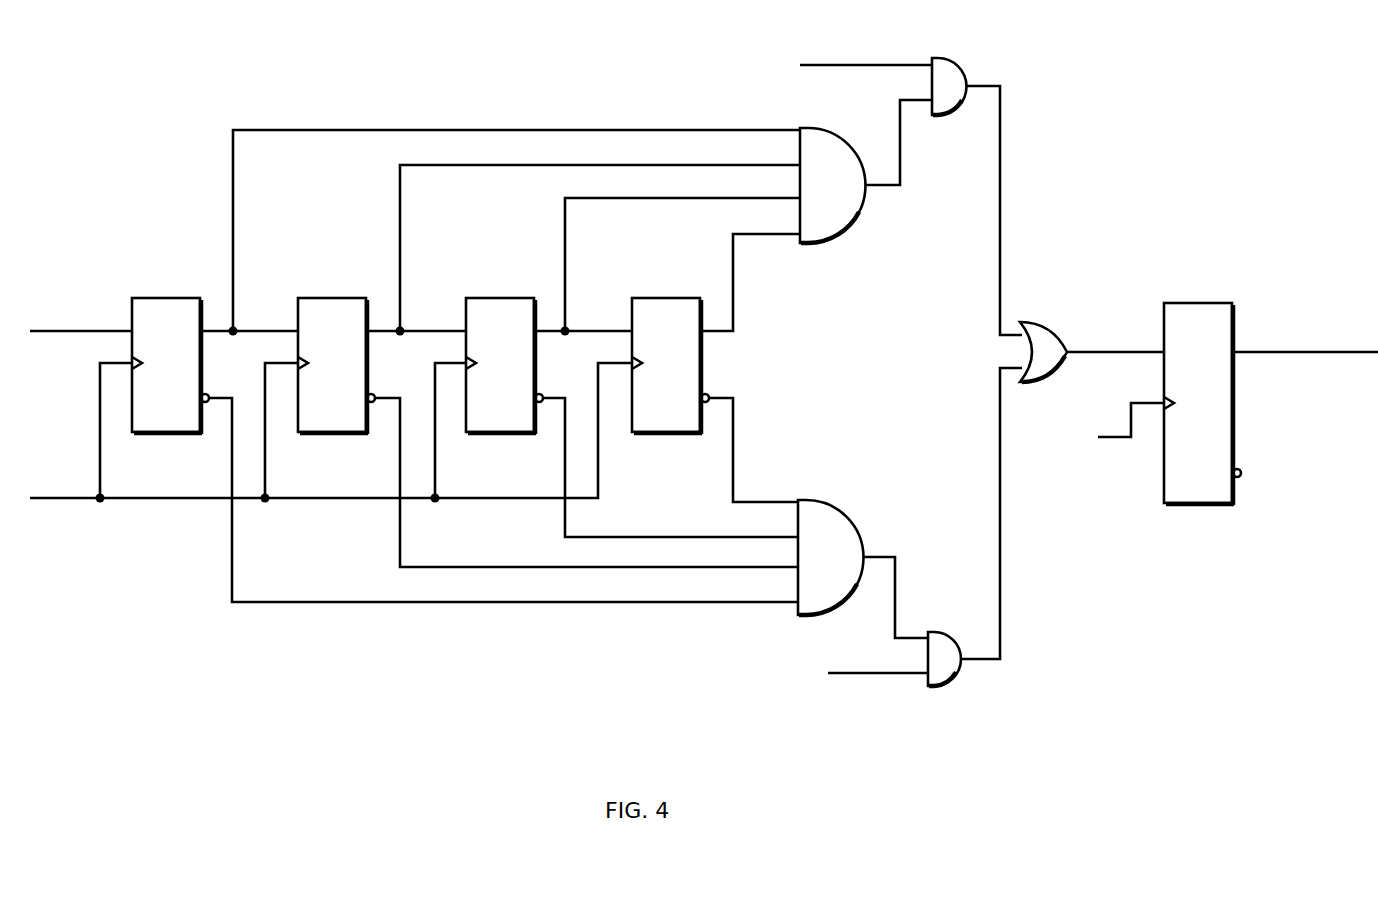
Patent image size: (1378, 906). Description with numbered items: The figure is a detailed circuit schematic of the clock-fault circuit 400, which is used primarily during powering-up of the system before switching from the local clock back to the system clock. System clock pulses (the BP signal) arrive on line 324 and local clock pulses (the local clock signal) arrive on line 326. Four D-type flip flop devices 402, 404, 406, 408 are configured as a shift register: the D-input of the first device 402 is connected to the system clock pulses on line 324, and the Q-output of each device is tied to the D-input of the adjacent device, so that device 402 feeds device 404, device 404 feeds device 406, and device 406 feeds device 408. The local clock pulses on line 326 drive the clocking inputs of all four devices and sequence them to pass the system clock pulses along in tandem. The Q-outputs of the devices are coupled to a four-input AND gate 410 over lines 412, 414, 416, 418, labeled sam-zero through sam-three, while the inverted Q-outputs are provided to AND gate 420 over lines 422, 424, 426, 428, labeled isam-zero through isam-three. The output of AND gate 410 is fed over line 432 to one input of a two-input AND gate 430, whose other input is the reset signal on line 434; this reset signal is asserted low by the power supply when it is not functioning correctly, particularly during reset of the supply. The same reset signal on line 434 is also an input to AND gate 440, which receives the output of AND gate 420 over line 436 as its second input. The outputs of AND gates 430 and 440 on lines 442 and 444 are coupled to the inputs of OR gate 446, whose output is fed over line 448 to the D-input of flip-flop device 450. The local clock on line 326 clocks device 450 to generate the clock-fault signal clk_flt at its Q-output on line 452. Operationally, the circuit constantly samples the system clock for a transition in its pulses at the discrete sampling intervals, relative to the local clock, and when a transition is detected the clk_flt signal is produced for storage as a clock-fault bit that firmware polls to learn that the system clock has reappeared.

The clock-fault circuit 400 is at (186, 80).
The line 324 is at (104, 338).
The line 326 is at (92, 480).
The D-type flip flop device 402 is at (176, 298).
The D-type flip flop device 404 is at (352, 434).
The D-type flip flop device 406 is at (520, 434).
The D-type flip flop device 408 is at (688, 434).
The 4-input AND gate 410 is at (850, 232).
The line 412 is at (320, 131).
The line 414 is at (513, 166).
The line 416 is at (660, 199).
The line 418 is at (734, 260).
The AND gate 420 is at (818, 498).
The line 422 is at (488, 603).
The line 424 is at (603, 568).
The line 426 is at (716, 538).
The line 428 is at (786, 503).
The 2-input AND gate 430 is at (962, 62).
The line 432 is at (900, 148).
The line 434 is at (887, 65).
The line 436 is at (895, 577).
The AND gate 440 is at (966, 668).
The line 442 is at (1000, 148).
The line 444 is at (1000, 548).
The OR gate 446 is at (1052, 326).
The line 448 is at (1130, 354).
The flip-flop device 450 is at (1193, 506).
The line 452 is at (1342, 348).